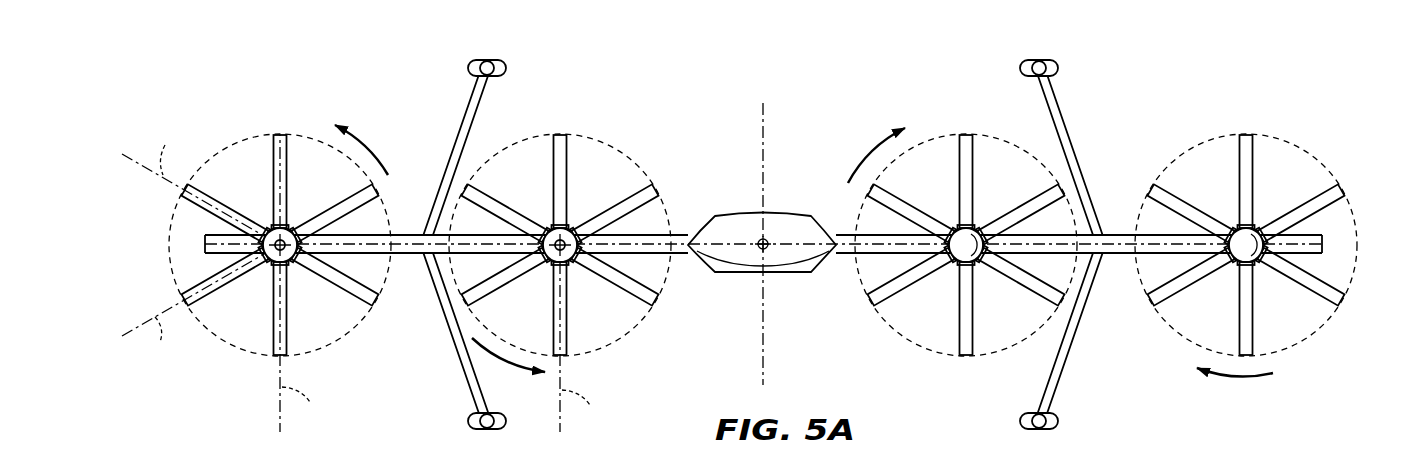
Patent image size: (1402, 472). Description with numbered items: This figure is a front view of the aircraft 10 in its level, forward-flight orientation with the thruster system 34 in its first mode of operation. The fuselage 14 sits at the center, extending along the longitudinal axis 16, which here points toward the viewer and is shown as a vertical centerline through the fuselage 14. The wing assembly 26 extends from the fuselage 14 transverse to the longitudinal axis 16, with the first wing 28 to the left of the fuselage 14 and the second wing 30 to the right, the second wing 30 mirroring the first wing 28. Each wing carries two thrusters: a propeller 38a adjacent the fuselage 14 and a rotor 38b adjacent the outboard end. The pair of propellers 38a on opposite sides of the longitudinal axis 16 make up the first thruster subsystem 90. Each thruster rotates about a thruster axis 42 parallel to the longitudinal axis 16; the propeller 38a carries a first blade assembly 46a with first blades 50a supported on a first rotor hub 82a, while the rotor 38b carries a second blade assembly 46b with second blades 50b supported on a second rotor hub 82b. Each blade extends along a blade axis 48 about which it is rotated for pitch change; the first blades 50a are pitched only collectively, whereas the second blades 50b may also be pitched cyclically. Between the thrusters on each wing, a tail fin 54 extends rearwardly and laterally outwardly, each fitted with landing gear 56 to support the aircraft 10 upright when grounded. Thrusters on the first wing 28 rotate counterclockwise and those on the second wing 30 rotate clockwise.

The aircraft 10 is at (756, 219).
The fuselage 14 is at (800, 232).
The longitudinal axis 16 is at (760, 244).
The wing assembly 26 is at (686, 232).
The first wing 28 is at (203, 243).
The second wing 30 is at (1322, 244).
The thruster system 34 is at (1172, 95).
The propeller 38a is at (590, 130).
The rotor 38b is at (243, 130).
The thruster axis 42 is at (288, 228).
The first blade assembly 46a is at (640, 320).
The second blade assembly 46b is at (322, 304).
The blade axis 48 is at (369, 277).
The first blade 50a is at (565, 320).
The second blade 50b is at (222, 195).
The tail fin 54 is at (452, 148).
The landing gear 56 is at (470, 60).
The first rotor hub 82a is at (553, 232).
The second rotor hub 82b is at (270, 230).
The first thruster subsystem 90 is at (650, 117).